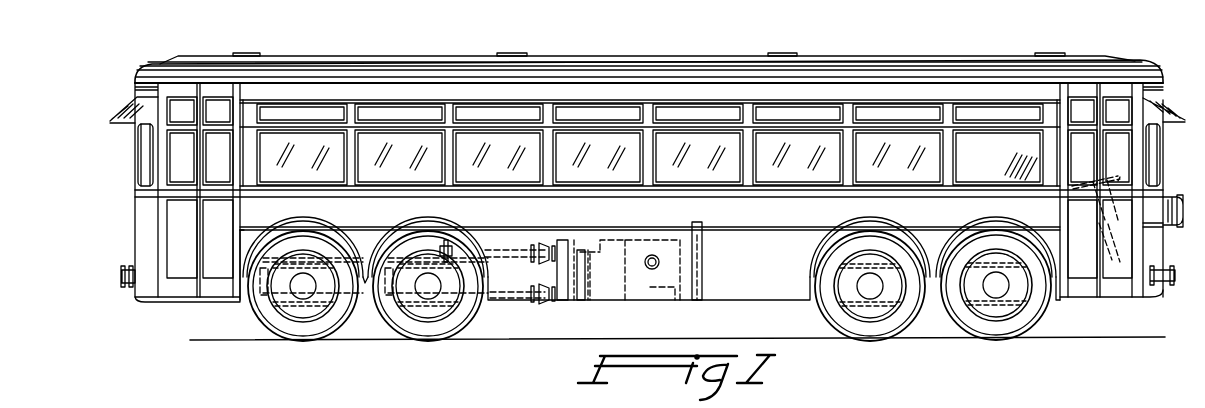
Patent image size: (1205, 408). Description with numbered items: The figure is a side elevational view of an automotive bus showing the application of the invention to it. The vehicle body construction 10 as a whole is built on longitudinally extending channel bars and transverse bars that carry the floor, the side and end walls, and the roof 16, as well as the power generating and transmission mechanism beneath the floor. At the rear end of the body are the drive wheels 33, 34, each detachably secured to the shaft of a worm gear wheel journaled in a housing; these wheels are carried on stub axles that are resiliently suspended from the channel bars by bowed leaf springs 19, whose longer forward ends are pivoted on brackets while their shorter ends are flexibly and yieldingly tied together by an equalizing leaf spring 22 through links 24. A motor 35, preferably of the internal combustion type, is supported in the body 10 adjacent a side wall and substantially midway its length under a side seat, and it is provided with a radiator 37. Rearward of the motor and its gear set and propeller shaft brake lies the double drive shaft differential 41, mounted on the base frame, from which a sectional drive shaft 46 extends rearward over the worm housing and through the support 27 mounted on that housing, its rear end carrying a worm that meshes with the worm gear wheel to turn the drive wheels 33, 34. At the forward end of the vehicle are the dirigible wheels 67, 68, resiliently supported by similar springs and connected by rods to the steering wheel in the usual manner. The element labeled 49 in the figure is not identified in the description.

The automotive bus or vehicle body construction 10 is at (808, 131).
The roof 16 is at (1088, 68).
The bowed leaf spring 19 is at (492, 281).
The equalizing leaf spring 22 is at (366, 236).
The links 24 is at (409, 226).
The support 27 is at (446, 250).
The drive wheel 33 is at (449, 330).
The drive wheel 34 is at (318, 332).
The motor 35 is at (617, 288).
The radiator 37 is at (703, 277).
The double drive shaft differential 41 is at (573, 247).
The sectional drive shaft 46 is at (508, 252).
The lower drive shaft 49 is at (524, 301).
The dirigible wheel 67 is at (871, 320).
The dirigible wheel 68 is at (990, 320).